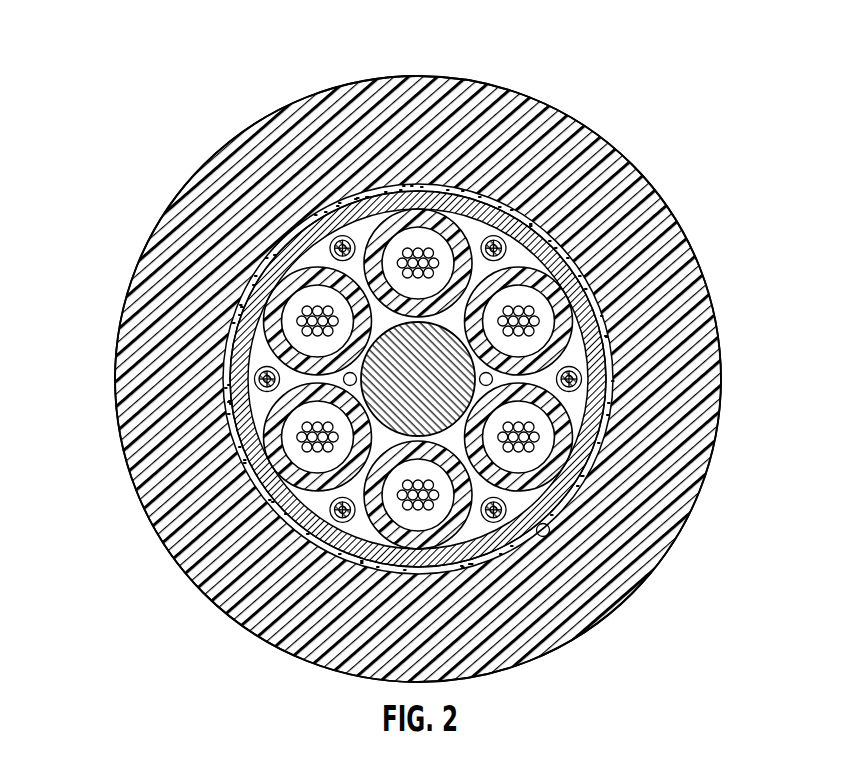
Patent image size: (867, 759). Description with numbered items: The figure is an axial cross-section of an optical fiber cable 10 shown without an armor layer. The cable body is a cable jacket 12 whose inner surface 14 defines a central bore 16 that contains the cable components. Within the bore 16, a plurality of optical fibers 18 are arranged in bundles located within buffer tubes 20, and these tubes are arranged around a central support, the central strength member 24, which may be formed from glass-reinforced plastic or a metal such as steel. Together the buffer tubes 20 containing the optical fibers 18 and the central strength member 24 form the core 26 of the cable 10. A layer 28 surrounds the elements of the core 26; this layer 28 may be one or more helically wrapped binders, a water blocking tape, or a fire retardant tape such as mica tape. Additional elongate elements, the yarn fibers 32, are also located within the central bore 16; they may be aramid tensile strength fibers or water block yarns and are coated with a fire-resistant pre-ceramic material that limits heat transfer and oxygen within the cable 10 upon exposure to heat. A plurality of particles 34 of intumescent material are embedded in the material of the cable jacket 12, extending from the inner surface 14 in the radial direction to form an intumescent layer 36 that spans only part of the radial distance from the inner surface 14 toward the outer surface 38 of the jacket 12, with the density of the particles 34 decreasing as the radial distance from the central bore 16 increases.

The cable 10 is at (699, 173).
The cable jacket 12 is at (538, 104).
The inner surface 14 is at (241, 380).
The central bore 16 is at (263, 407).
The optical fibers 18 is at (422, 248).
The buffer tubes 20 is at (302, 268).
The central strength member 24 is at (350, 547).
The core 26 is at (319, 501).
The layer 28 is at (416, 222).
The yarn fibers 32 is at (495, 525).
The particles 34 is at (503, 235).
The intumescent layer 36 is at (540, 228).
The outer surface 38 is at (622, 597).